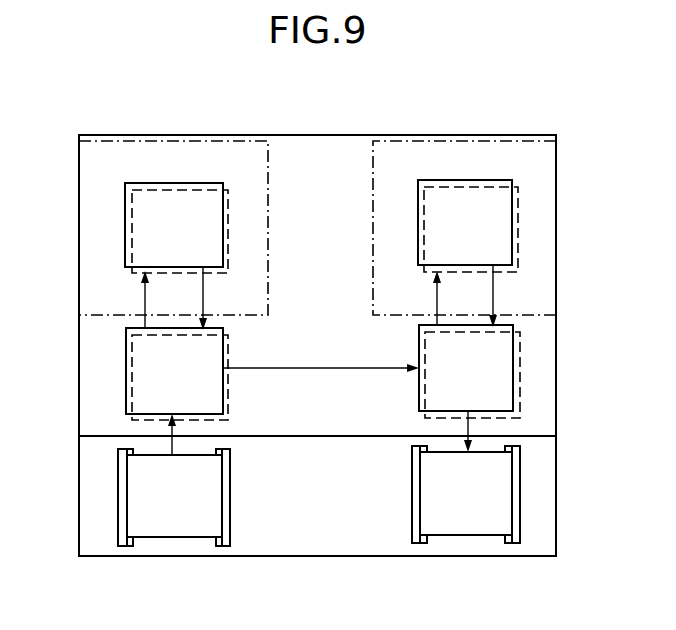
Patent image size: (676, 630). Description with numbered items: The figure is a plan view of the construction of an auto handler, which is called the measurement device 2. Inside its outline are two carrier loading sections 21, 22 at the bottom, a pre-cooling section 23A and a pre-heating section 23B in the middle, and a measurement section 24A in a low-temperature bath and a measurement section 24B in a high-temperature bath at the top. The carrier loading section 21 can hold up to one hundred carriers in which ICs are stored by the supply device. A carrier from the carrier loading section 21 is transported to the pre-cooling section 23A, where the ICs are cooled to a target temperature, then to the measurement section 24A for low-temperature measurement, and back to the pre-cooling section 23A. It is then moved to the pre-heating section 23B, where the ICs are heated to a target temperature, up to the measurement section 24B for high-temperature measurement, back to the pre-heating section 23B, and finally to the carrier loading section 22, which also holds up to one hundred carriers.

The measurement device 2 is at (332, 128).
The carrier loading section 21 is at (157, 537).
The carrier loading section 22 is at (474, 535).
The pre-cooling section 23A is at (126, 386).
The pre-heating section 23B is at (520, 374).
The measurement section in a low-temperature bath 24A is at (149, 183).
The measurement section in a high-temperature bath 24B is at (467, 180).